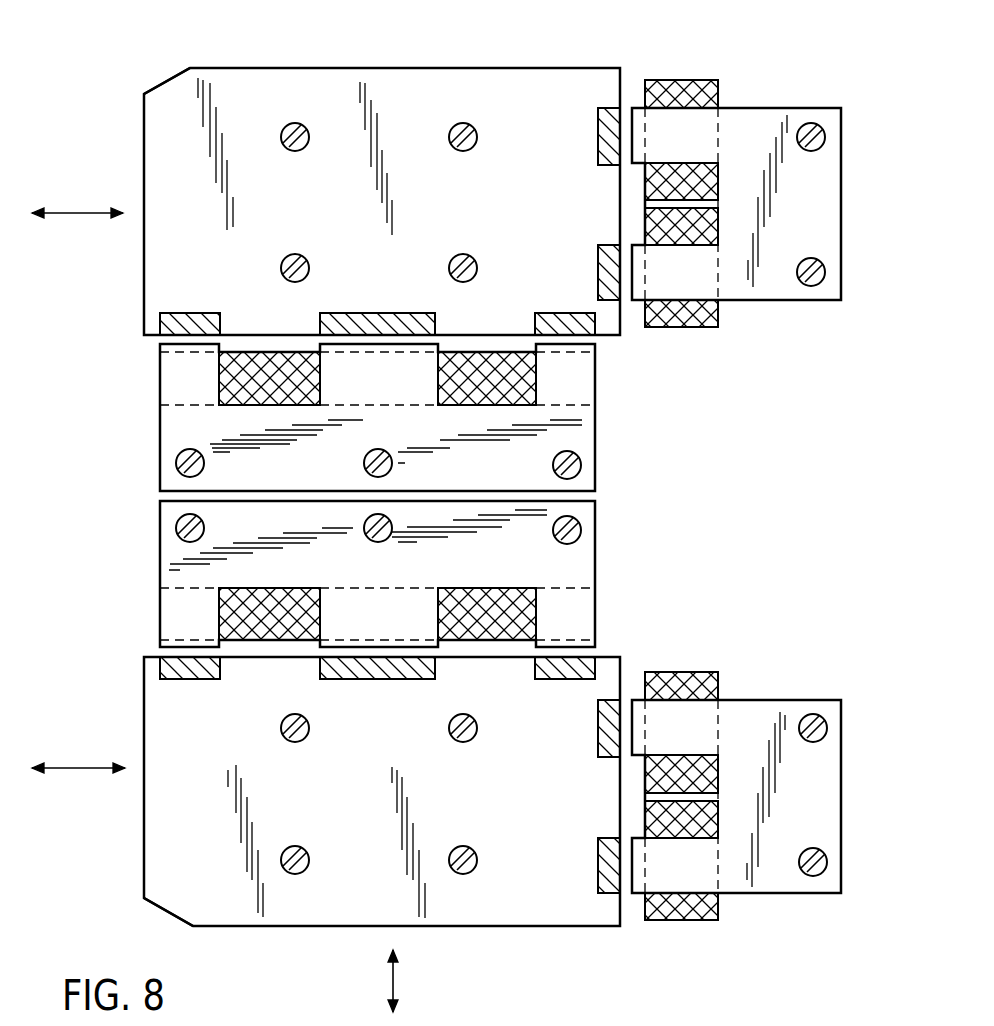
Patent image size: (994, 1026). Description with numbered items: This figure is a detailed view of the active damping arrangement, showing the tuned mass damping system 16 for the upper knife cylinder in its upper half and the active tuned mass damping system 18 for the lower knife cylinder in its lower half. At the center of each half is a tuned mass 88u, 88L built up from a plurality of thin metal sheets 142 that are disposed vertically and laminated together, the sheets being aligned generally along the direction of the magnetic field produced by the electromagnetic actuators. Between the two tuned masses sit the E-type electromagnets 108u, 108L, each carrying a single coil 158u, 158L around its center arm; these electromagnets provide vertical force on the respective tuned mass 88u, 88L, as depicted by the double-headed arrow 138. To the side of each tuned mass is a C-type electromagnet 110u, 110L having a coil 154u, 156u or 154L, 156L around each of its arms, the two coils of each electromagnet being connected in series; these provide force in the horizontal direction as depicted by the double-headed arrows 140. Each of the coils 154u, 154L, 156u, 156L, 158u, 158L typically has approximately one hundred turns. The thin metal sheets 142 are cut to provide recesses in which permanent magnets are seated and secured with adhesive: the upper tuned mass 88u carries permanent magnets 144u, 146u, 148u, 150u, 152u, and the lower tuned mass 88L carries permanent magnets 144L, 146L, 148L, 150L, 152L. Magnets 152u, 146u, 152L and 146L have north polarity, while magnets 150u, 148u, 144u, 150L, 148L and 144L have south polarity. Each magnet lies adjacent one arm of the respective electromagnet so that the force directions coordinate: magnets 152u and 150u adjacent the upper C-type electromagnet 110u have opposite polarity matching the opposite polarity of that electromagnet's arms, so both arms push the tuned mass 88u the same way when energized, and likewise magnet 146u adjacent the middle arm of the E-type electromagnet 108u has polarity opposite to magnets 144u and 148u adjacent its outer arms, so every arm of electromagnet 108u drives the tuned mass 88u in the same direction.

The tuned mass damping system 16 is at (750, 215).
The active tuned mass damping system 18 is at (750, 807).
The upper tuned mass 88u is at (388, 78).
The lower tuned mass 88L is at (235, 908).
The E-type electromagnet 108u is at (425, 417).
The E-type electromagnet 108L is at (430, 574).
The C-type electromagnet 110u is at (757, 285).
The C-type electromagnet 110L is at (770, 707).
The double-headed arrow 138 is at (393, 978).
The double-headed arrows 140 is at (93, 212).
The thin metal sheets 142 is at (165, 87).
The permanent magnet 144u is at (210, 313).
The permanent magnet 144L is at (210, 680).
The permanent magnet 146u is at (427, 313).
The permanent magnet 146L is at (340, 680).
The permanent magnet 148u is at (537, 313).
The permanent magnet 148L is at (552, 680).
The permanent magnet 150u is at (598, 250).
The permanent magnet 150L is at (598, 742).
The permanent magnet 152u is at (598, 112).
The permanent magnet 152L is at (598, 845).
The coil 154u is at (684, 80).
The coil 154L is at (695, 672).
The coil 156u is at (700, 326).
The coil 156L is at (683, 920).
The coil 158u is at (528, 373).
The coil 158L is at (528, 620).